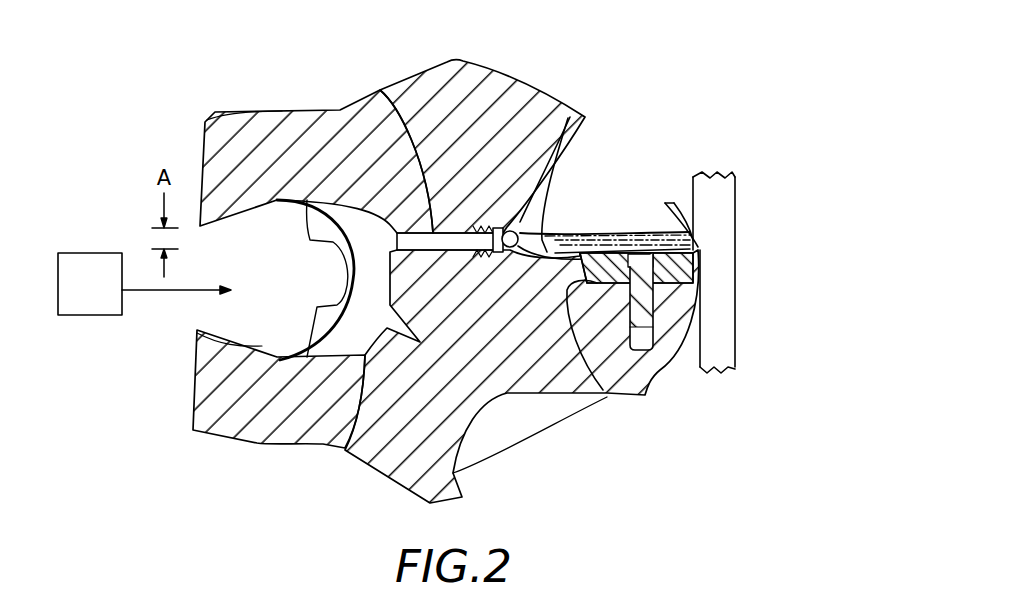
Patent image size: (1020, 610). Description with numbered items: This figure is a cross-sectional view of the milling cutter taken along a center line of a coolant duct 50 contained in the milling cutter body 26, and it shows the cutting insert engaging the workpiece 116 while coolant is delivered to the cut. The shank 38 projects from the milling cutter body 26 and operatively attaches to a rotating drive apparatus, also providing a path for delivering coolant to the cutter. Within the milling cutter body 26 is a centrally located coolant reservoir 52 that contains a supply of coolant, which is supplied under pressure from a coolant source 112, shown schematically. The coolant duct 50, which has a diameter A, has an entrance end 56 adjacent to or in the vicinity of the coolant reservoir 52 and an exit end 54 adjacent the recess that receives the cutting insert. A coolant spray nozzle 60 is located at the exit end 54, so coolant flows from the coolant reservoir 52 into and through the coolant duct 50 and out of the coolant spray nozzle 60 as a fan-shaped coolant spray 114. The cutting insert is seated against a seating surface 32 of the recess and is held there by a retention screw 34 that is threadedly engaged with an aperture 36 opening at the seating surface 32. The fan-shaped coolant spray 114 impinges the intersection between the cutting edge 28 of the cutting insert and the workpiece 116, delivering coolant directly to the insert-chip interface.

The milling cutter body 26 is at (503, 84).
The cutting edge 28 is at (698, 248).
The seating surface 32 is at (605, 395).
The retention screw 34 is at (654, 302).
The aperture 36 is at (660, 380).
The shank 38 is at (283, 110).
The coolant duct 50 is at (380, 90).
The coolant reservoir 52 is at (276, 282).
The exit end 54 is at (522, 215).
The entrance end 56 is at (345, 450).
The coolant spray nozzle 60 is at (531, 234).
The coolant source 112 is at (101, 294).
The fan-shaped coolant spray 114 is at (648, 228).
The workpiece 116 is at (724, 201).